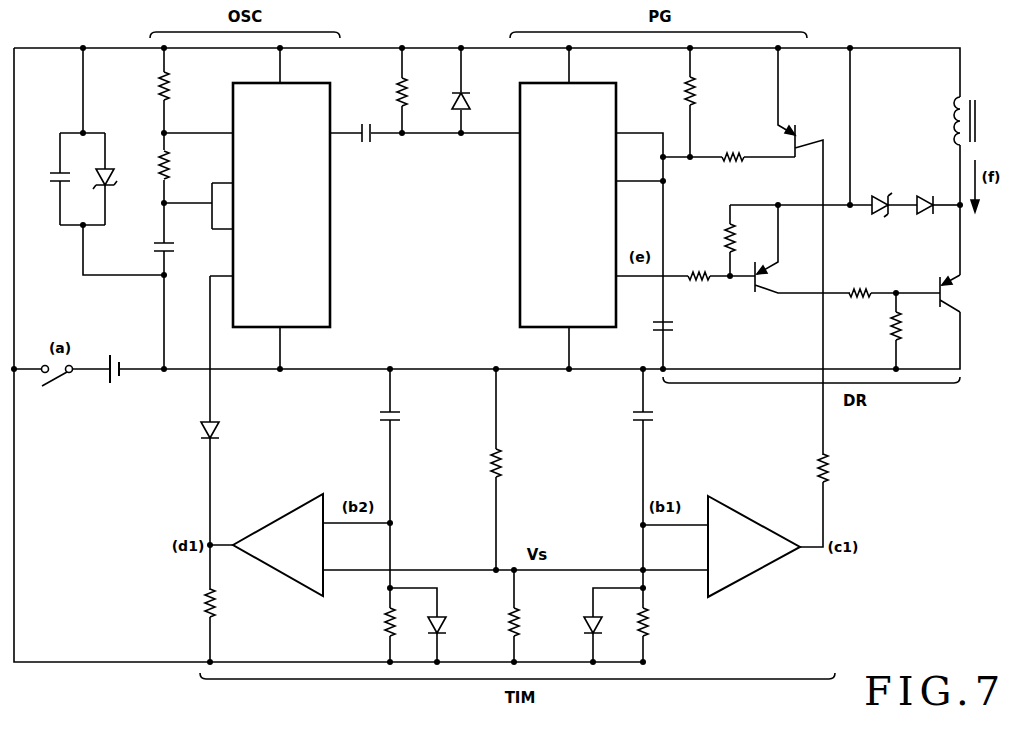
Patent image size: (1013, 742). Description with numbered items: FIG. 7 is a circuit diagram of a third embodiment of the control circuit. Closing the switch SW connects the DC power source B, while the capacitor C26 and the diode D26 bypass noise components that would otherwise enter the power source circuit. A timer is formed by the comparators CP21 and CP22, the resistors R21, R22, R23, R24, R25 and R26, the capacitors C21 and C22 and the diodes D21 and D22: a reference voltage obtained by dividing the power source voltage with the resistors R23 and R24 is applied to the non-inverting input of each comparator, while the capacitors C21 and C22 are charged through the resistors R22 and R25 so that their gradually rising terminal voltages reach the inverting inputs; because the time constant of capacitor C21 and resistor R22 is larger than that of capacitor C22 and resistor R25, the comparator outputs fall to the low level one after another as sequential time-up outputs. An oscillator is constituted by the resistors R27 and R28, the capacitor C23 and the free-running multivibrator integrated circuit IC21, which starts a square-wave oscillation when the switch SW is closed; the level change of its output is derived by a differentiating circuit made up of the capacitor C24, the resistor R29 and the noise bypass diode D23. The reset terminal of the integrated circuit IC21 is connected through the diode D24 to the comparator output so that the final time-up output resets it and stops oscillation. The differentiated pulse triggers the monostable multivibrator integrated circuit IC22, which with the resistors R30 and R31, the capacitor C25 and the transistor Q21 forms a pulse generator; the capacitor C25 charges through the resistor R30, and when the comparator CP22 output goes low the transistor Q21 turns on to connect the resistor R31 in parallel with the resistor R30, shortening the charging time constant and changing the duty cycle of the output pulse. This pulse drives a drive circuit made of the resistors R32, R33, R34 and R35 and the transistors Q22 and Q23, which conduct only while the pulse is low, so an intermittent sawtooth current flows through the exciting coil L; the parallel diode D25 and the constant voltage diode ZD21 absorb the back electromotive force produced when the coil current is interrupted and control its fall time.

The freerunning multivibrator type integrated circuit IC21 is at (263, 208).
The monostable multivibrator integrated circuit IC22 is at (529, 208).
The capacitor C26 is at (52, 172).
The diode D26 is at (119, 172).
The resistor R27 is at (171, 88).
The resistor R28 is at (171, 165).
The capacitor C23 is at (175, 247).
The capacitor C24 is at (363, 122).
The resistor R29 is at (407, 96).
The noise bypass diode D23 is at (469, 100).
The resistor R30 is at (684, 92).
The resistor R31 is at (729, 148).
The transistor Q21 is at (800, 124).
The exciting coil L is at (951, 120).
The constant voltage diode ZD21 is at (878, 196).
The parallel diode D25 is at (924, 196).
The resistor R33 is at (720, 239).
The resistor R32 is at (700, 288).
The transistor Q22 is at (776, 272).
The resistor R34 is at (861, 287).
The transistor Q23 is at (953, 297).
The resistor R35 is at (887, 326).
The capacitor C25 is at (653, 324).
The capacitor C22 is at (657, 418).
The capacitor C21 is at (402, 418).
The resistor R24 is at (506, 465).
The resistor R26 is at (834, 468).
The switch SW is at (58, 390).
The DC power source B is at (115, 354).
The diode D24 is at (222, 428).
The resistor R21 is at (216, 604).
The comparator CP21 is at (426, 545).
The comparator CP22 is at (721, 546).
The resistor R22 is at (383, 620).
The diode D21 is at (447, 623).
The resistor R23 is at (524, 625).
The diode D22 is at (585, 616).
The resistor R25 is at (651, 622).